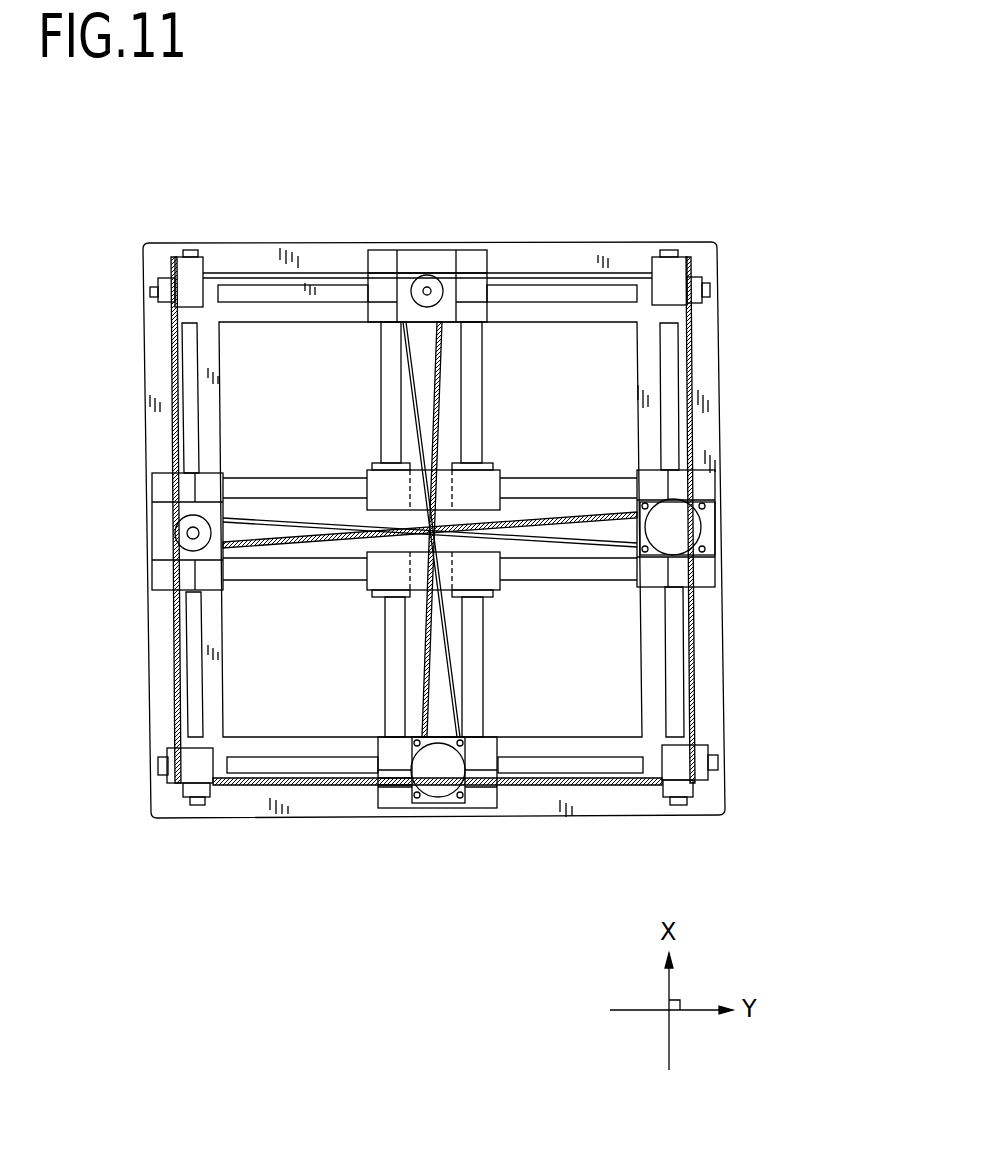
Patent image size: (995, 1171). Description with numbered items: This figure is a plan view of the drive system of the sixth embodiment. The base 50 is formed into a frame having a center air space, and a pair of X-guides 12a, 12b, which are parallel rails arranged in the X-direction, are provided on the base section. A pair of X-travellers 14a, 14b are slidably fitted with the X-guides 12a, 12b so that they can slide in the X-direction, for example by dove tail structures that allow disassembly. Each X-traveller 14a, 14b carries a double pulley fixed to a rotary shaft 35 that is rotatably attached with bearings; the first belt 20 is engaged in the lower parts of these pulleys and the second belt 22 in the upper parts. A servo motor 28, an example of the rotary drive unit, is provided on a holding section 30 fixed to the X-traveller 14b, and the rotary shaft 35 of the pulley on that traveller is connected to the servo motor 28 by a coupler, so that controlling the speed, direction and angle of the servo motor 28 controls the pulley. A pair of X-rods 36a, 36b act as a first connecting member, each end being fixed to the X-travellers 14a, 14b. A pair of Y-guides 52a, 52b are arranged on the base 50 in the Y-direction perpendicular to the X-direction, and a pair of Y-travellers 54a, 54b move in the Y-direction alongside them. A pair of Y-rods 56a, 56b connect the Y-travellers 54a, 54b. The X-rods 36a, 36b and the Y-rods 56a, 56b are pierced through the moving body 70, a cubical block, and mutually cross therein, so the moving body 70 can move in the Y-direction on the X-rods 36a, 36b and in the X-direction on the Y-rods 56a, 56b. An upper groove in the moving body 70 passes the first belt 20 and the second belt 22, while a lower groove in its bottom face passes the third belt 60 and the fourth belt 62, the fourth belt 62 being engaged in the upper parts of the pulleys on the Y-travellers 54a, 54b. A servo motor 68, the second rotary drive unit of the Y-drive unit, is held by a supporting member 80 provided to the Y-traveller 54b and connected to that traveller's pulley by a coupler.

The base 50 is at (152, 318).
The X-guide 12a is at (188, 347).
The X-guide 12b is at (670, 418).
The X-traveller 14a is at (158, 487).
The X-traveller 14b is at (703, 485).
The first belt 20 is at (568, 512).
The second belt 22 is at (577, 543).
The servo motor 28 is at (690, 528).
The holding section 30 is at (712, 542).
The rotary shaft 35 is at (427, 276).
The X-rod 36a is at (285, 484).
The X-rod 36b is at (283, 578).
The Y-guide 52a is at (288, 292).
The Y-guide 52b is at (262, 768).
The Y-traveller 54a is at (380, 250).
The Y-traveller 54b is at (393, 797).
The Y-rod 56a is at (383, 383).
The Y-rod 56b is at (477, 380).
The third belt 60 is at (405, 668).
The fourth belt 62 is at (452, 663).
The servo motor 68 is at (440, 778).
The moving body 70 is at (488, 478).
The supporting member 80 is at (467, 785).